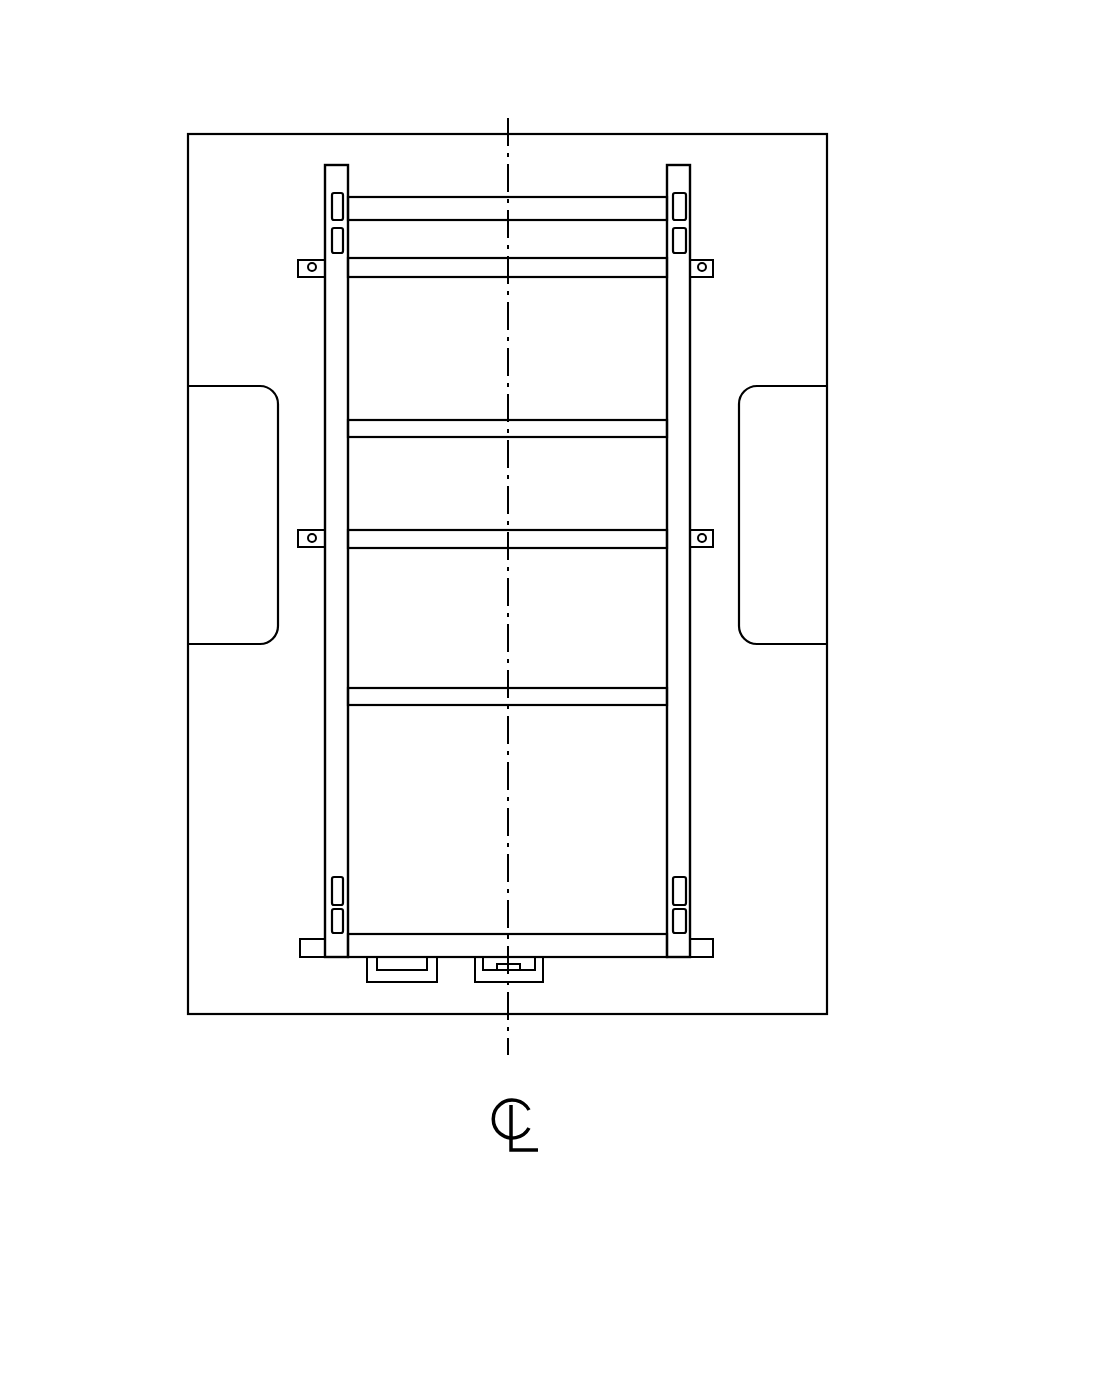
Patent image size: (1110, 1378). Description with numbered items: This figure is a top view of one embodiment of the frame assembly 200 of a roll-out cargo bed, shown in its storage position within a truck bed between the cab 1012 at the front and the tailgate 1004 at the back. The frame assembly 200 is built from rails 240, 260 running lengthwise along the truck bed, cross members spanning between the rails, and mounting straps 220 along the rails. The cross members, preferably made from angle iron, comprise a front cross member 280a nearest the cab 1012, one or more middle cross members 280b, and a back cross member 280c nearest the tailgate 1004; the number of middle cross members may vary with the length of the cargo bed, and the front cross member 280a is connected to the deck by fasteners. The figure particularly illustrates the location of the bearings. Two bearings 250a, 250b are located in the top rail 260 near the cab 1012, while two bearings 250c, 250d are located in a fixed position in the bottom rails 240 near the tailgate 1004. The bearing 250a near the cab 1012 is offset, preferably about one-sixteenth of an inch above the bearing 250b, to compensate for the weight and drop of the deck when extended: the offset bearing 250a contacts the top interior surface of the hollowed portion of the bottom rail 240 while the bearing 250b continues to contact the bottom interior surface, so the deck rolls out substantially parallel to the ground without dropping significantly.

The frame assembly 200 is at (674, 66).
The mounting straps 220 is at (385, 272).
The bottom rail 240 is at (576, 517).
The top rail 260 is at (325, 165).
The offset bearing 250a is at (332, 206).
The bearing 250b is at (343, 238).
The bearing 250c is at (332, 891).
The bearing 250d is at (332, 923).
The front cross member 280a is at (574, 205).
The middle cross member 280b is at (577, 430).
The back cross member 280c is at (601, 942).
The cab 1012 is at (508, 55).
The tailgate 1004 is at (671, 1151).